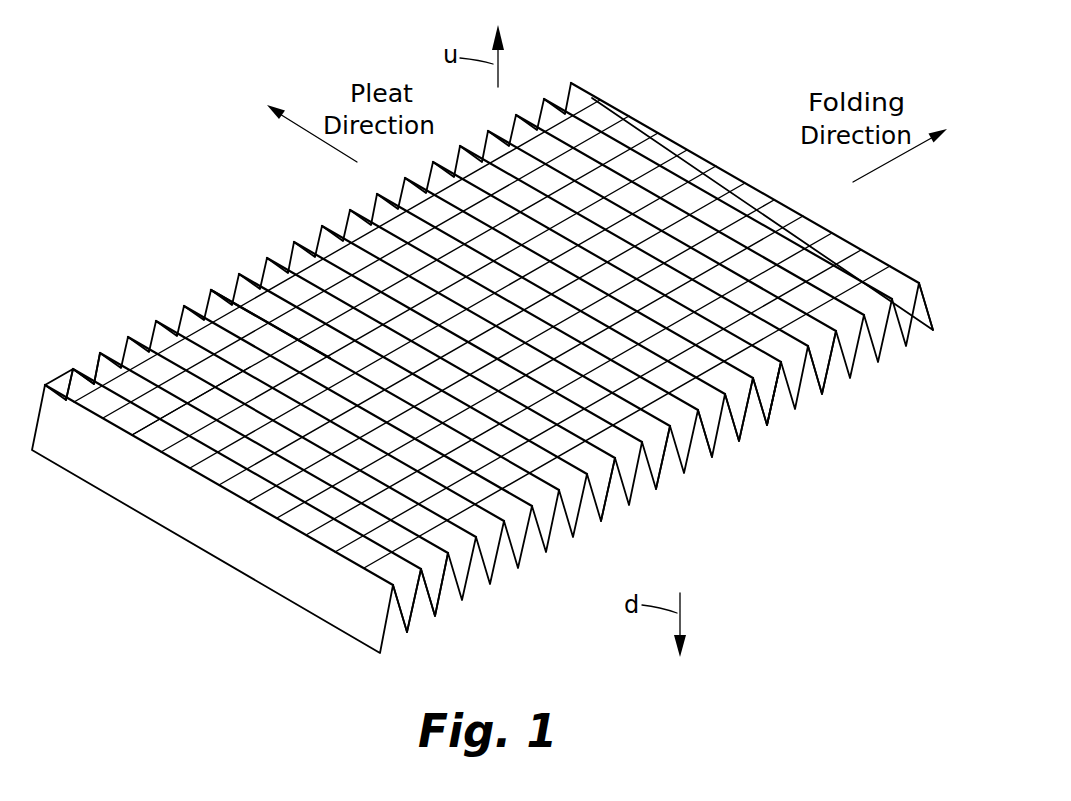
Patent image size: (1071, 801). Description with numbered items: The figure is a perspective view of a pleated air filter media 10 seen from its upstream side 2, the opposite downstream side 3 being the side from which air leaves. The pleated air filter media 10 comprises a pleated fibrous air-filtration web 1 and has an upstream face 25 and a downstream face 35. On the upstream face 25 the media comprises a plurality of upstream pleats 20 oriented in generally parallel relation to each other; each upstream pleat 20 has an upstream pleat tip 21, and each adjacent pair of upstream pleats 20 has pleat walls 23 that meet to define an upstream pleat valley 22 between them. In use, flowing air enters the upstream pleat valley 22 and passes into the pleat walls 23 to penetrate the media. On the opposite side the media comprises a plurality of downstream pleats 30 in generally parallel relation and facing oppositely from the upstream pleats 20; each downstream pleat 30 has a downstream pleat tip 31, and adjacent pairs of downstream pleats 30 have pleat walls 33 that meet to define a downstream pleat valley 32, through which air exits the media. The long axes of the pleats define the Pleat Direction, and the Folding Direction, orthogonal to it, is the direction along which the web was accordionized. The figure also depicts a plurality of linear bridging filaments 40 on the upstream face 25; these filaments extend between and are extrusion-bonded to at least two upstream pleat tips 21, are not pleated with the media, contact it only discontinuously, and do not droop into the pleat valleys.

The pleated air filter media 10 is at (704, 55).
The pleated fibrous air-filtration web 1 is at (190, 357).
The upstream side 2 is at (235, 232).
The downstream side 3 is at (786, 508).
The upstream pleats 20 is at (420, 572).
The upstream pleat tip 21 is at (412, 565).
The upstream pleat valley 22 is at (408, 632).
The pleat walls 23 is at (603, 467).
The upstream face 25 is at (92, 372).
The downstream pleats 30 is at (707, 458).
The downstream pleat tip 31 is at (668, 470).
The downstream pleat valley 32 is at (778, 413).
The pleat walls 33 is at (840, 360).
The downstream face 35 is at (889, 333).
The linear bridging filaments 40 is at (762, 213).